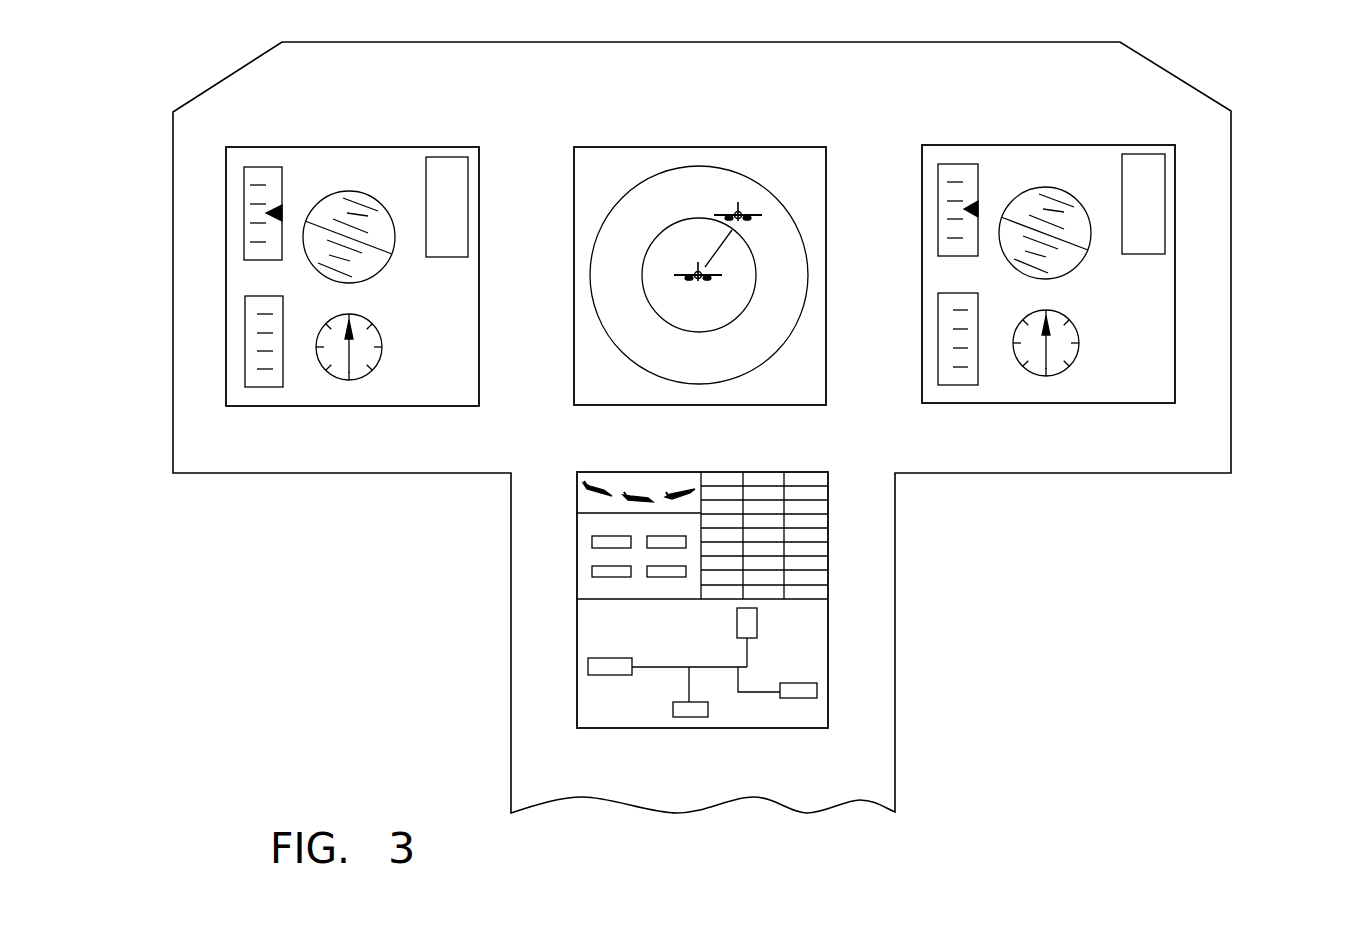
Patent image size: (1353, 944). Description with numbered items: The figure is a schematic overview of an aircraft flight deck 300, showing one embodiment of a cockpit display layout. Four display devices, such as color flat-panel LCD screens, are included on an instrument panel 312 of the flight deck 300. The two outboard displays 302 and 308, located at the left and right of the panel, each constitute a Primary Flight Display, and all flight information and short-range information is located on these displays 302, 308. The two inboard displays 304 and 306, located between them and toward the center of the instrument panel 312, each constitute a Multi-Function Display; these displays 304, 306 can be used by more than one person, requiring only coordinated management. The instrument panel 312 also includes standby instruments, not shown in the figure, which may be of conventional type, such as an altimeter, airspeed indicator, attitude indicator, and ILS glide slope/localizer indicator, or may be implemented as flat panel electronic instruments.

The flight deck 300 is at (750, 427).
The outboard display 302 is at (390, 162).
The inboard display 304 is at (778, 160).
The inboard display 306 is at (799, 503).
The outboard display 308 is at (1060, 158).
The instrument panel 312 is at (1231, 365).